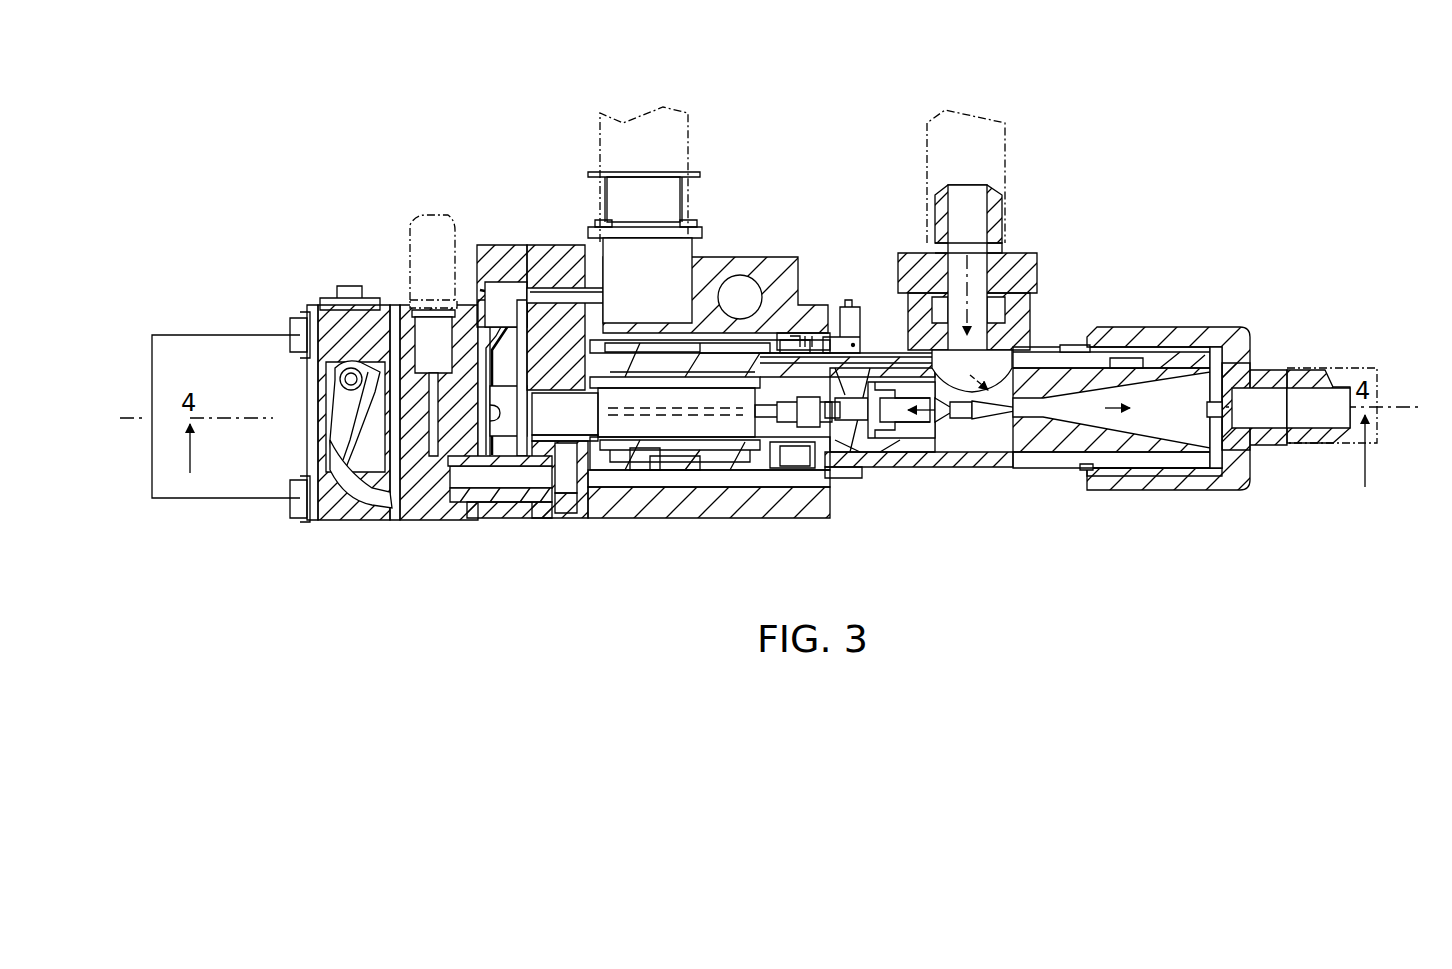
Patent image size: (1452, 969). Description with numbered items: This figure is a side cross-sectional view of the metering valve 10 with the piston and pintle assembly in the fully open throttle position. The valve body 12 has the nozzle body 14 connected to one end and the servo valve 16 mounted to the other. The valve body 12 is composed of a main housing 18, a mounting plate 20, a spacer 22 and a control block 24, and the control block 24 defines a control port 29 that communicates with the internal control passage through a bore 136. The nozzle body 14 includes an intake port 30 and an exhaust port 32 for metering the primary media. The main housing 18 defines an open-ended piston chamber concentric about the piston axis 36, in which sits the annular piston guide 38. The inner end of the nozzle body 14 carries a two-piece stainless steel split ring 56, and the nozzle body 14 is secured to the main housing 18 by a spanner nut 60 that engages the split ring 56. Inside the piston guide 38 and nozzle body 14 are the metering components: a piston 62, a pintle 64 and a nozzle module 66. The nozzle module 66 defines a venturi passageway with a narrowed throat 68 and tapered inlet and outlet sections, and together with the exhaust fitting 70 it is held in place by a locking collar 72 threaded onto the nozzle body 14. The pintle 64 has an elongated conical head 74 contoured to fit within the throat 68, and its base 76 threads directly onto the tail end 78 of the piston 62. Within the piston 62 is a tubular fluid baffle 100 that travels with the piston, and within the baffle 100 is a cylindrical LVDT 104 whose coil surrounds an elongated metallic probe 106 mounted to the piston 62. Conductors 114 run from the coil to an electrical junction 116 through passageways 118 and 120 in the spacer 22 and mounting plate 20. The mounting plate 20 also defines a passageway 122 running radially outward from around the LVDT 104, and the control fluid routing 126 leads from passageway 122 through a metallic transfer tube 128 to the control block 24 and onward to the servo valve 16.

The metering valve 10 is at (895, 90).
The valve body 12 is at (770, 250).
The nozzle body 14 is at (968, 470).
The servo valve 16 is at (221, 500).
The main housing 18 is at (618, 505).
The mounting plate 20 is at (537, 510).
The spacer 22 is at (512, 503).
The control block 24 is at (420, 500).
The control port 29 is at (438, 304).
The intake port 30 is at (975, 190).
The exhaust port 32 is at (1303, 417).
The piston axis 36 is at (1412, 405).
The piston guide 38 is at (640, 472).
The split ring 56 is at (800, 333).
The spanner nut 60 is at (848, 307).
The piston 62 is at (860, 442).
The pintle 64 is at (928, 442).
The nozzle module 66 is at (1078, 440).
The throat 68 is at (1045, 362).
The exhaust fitting 70 is at (1272, 449).
The locking collar 72 is at (1163, 482).
The conical head 74 is at (987, 422).
The base 76 is at (893, 353).
The tail end 78 is at (892, 422).
The fluid baffle 100 is at (682, 437).
The linear variable differential transformer 104 is at (565, 417).
The probe 106 is at (770, 432).
The conductors 114 is at (478, 318).
The electrical junction 116 is at (668, 205).
The passageway 118 is at (505, 290).
The passageway 120 is at (573, 290).
The passageway 122 is at (578, 482).
The control fluid routing 126 is at (432, 468).
The transfer tube 128 is at (470, 492).
The bore 136 is at (395, 410).